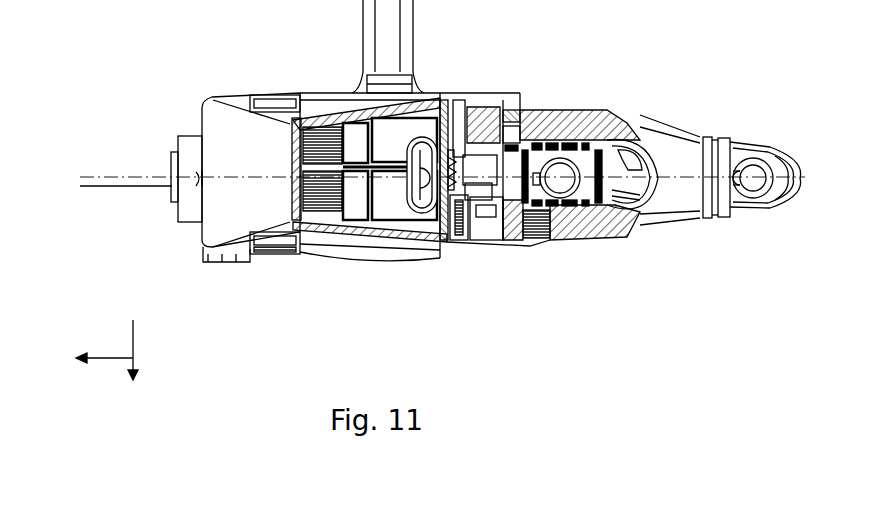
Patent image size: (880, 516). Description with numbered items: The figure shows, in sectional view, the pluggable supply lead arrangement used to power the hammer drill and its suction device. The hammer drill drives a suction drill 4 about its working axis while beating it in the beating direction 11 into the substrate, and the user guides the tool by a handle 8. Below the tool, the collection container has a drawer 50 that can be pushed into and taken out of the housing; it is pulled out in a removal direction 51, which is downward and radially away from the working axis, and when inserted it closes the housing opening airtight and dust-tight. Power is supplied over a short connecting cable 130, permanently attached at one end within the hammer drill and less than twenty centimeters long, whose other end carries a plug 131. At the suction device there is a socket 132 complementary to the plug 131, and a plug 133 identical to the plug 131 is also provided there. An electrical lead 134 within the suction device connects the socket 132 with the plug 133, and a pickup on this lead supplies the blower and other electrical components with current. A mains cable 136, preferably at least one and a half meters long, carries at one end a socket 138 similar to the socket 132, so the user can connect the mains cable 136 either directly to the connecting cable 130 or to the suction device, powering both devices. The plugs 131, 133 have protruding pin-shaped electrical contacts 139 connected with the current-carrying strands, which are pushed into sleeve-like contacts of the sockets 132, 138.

The suction drill 4 is at (130, 184).
The handle 8 is at (743, 207).
The beating direction 11 is at (118, 360).
The drawer 50 is at (223, 128).
The removal direction 51 is at (133, 336).
The connecting cable 130 is at (755, 170).
The plug 131 is at (565, 115).
The socket 132 is at (483, 150).
The plug 133 is at (515, 205).
The electrical lead 134 is at (477, 162).
The mains cable 136 is at (462, 192).
The socket 138 is at (583, 218).
The pin-shaped electrical contacts 139 is at (445, 123).